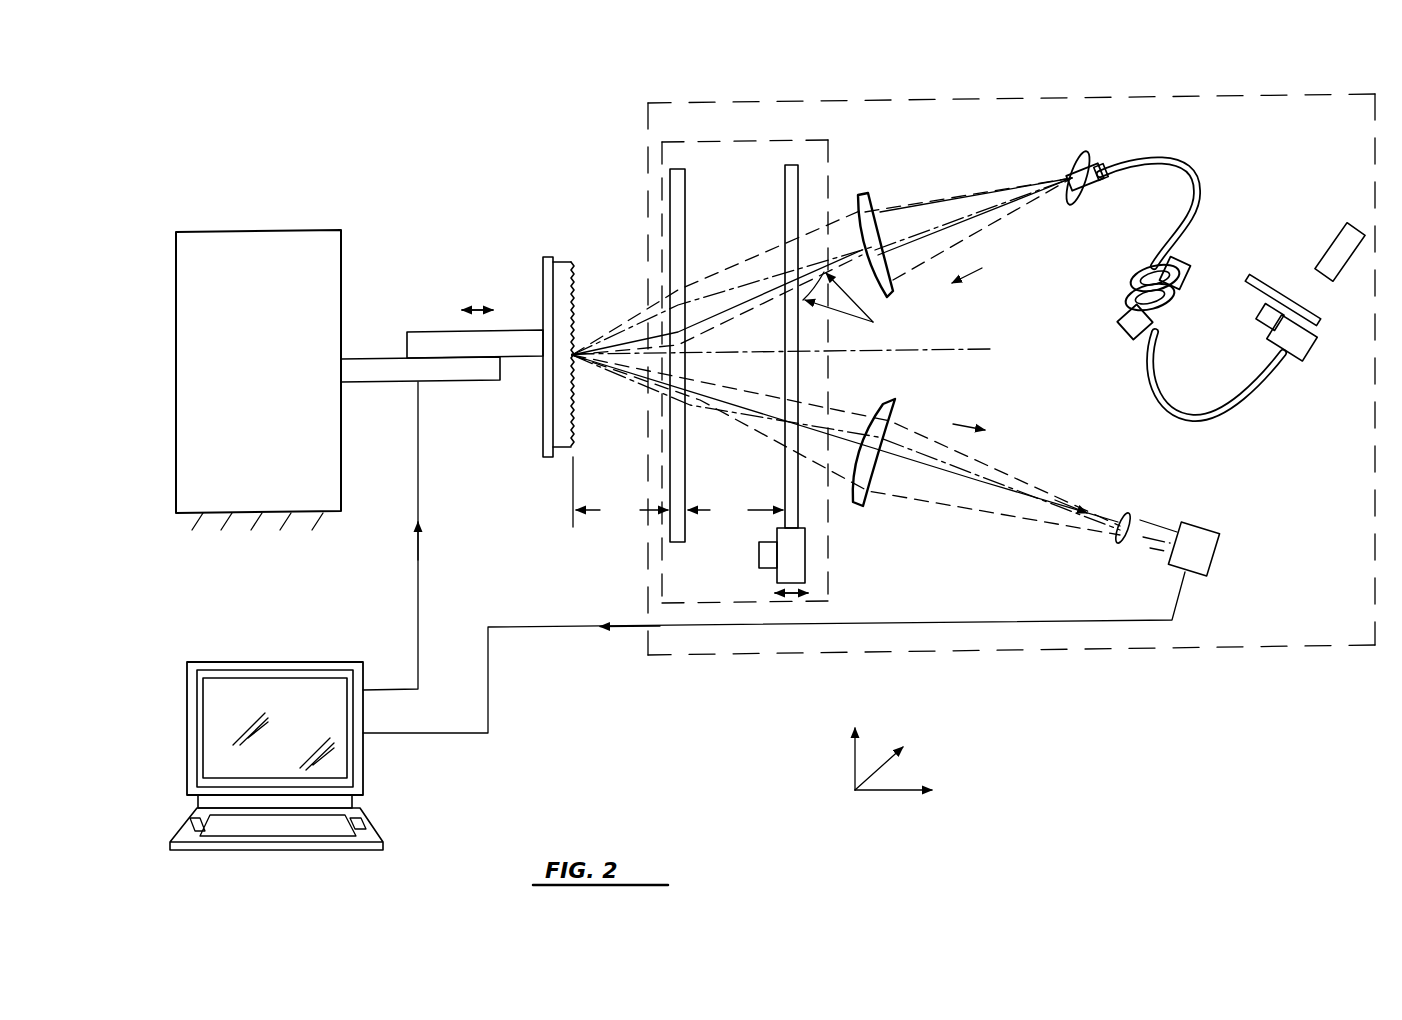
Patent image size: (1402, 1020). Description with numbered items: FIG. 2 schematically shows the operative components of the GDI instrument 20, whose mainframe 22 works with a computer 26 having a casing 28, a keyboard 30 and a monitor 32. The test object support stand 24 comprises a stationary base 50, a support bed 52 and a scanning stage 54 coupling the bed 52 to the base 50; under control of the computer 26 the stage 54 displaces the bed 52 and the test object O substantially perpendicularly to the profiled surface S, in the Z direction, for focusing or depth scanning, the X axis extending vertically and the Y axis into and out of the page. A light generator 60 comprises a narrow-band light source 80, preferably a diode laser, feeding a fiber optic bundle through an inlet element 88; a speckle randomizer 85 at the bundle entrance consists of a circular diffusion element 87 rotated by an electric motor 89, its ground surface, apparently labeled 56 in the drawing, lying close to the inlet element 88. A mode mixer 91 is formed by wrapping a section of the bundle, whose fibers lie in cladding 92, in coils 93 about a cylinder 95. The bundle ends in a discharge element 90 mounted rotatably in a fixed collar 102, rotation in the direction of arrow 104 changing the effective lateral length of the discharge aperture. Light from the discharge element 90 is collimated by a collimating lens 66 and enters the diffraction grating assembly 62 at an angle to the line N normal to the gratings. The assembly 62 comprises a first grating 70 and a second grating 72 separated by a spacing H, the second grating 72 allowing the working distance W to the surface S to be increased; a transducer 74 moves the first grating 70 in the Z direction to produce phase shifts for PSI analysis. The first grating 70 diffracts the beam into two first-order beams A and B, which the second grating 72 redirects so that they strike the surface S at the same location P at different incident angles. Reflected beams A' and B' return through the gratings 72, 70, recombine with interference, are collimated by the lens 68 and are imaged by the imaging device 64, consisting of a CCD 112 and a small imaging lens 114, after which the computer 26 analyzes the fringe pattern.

The GDI instrument 20 is at (1158, 38).
The mainframe 22 is at (905, 97).
The test object support stand 24 is at (373, 357).
The computer 26 is at (292, 614).
The casing 28 is at (198, 803).
The keyboard 30 is at (170, 842).
The monitor 32 is at (187, 708).
The stationary base 50 is at (285, 180).
The support bed 52 is at (546, 450).
The scanning stage 54 is at (430, 332).
The light generator 60 is at (1245, 196).
The diffraction grating assembly 62 is at (830, 145).
The imaging device 64 is at (1202, 522).
The collimating lens 66 is at (866, 196).
The lens 68 is at (891, 400).
The first grating 70 is at (800, 527).
The second grating 72 is at (678, 545).
The transducer 74 is at (806, 565).
The light source 80 is at (1344, 231).
The speckle randomizer 85 is at (1258, 281).
The diffusion element 87 is at (1312, 305).
The inlet element 88 is at (1312, 345).
The electric motor 89 is at (1267, 327).
The discharge element 90 is at (1097, 168).
The mode mixer 91 is at (1192, 290).
The cladding 92 is at (1180, 163).
The coils 93 is at (1128, 297).
The cylinder 95 is at (1136, 328).
The fixed collar 102 is at (1105, 186).
The arrow 104 is at (1066, 170).
The charge coupled device 112 is at (1217, 549).
The imaging lens 114 is at (1124, 512).
The beam 56 is at (1258, 290).
The first order beam A is at (822, 266).
The first order beam B is at (822, 266).
The reflected beam A' is at (874, 449).
The reflected beam B' is at (871, 453).
The location P is at (572, 356).
The profiled surface S is at (575, 287).
The test object O is at (560, 257).
The normal line N is at (957, 350).
The working distance W is at (620, 492).
The spacing H is at (735, 511).
The X axis X is at (852, 742).
The Y axis Y is at (889, 757).
The Z direction Z is at (905, 792).